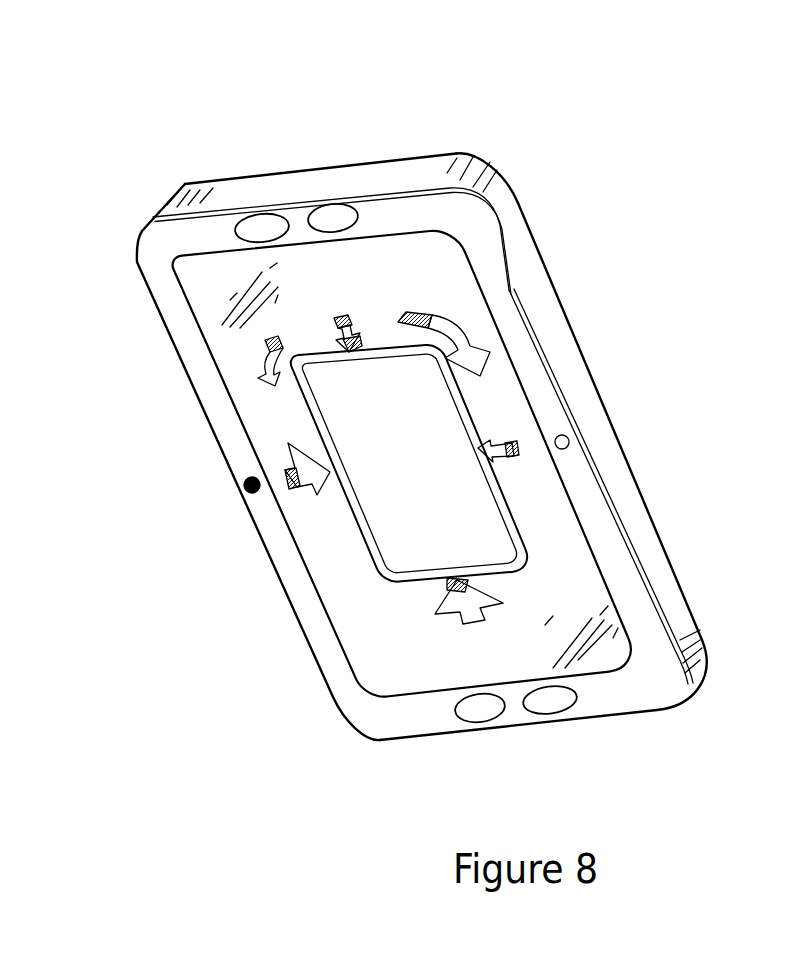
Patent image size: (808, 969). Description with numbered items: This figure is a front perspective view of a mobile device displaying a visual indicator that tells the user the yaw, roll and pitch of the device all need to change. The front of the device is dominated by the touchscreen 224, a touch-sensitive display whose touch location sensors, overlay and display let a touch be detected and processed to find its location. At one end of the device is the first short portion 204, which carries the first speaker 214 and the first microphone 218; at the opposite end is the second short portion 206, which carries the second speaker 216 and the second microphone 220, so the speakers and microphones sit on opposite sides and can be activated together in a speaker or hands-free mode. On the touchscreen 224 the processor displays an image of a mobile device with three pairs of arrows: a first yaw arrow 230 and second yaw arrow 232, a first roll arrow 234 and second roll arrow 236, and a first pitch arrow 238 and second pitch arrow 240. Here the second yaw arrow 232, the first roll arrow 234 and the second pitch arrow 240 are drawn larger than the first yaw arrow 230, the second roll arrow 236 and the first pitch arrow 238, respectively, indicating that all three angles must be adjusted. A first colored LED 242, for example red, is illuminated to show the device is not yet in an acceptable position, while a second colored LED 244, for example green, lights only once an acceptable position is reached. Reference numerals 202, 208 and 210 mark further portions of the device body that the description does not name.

The housing 202 is at (567, 357).
The first short portion 204 is at (403, 177).
The second short portion 206 is at (405, 740).
The left side of housing 208 is at (310, 653).
The right side of housing 210 is at (623, 487).
The first speaker 214 is at (253, 222).
The second speaker 216 is at (553, 703).
The first microphone 218 is at (332, 210).
The second microphone 220 is at (480, 713).
The touchscreen 224 is at (450, 243).
The first yaw arrow 230 is at (247, 378).
The second yaw arrow 232 is at (495, 352).
The first roll arrow 234 is at (317, 503).
The second roll arrow 236 is at (510, 457).
The first pitch arrow 238 is at (360, 323).
The second pitch arrow 240 is at (503, 603).
The first colored LED 242 is at (245, 488).
The second colored LED 244 is at (569, 440).